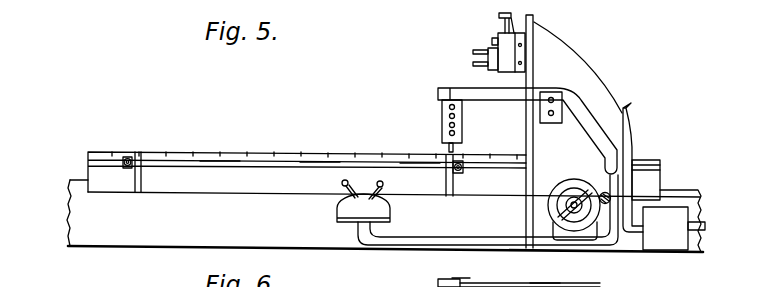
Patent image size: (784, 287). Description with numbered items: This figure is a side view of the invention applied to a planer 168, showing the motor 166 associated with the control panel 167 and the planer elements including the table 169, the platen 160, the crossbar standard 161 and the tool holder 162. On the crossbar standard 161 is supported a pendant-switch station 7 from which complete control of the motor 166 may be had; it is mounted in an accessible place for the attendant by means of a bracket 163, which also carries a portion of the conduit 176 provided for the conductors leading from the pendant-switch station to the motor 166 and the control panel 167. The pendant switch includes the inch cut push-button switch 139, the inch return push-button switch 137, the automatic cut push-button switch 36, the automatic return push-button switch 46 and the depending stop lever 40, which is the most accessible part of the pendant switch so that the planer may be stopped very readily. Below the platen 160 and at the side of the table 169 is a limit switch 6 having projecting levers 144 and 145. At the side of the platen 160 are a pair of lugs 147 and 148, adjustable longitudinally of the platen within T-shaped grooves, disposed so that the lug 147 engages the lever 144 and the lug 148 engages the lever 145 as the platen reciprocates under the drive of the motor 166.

In FIG. 5, the limit switch 6 is at (390, 214).
In FIG. 5, the pendant-switch station 7 is at (462, 133).
In FIG. 6, the pendant-switch station 7 is at (452, 278).
In FIG. 5, the automatic cut push-button switch 36 is at (449, 125).
In FIG. 5, the stop lever 40 is at (449, 148).
In FIG. 5, the automatic return push-button switch 46 is at (449, 133).
In FIG. 5, the inch return push-button switch 137 is at (449, 116).
In FIG. 5, the inch cut push-button switch 139 is at (449, 107).
In FIG. 5, the projecting lever 144 is at (342, 183).
In FIG. 5, the projecting lever 145 is at (383, 183).
In FIG. 5, the lug 147 is at (142, 181).
In FIG. 5, the lug 148 is at (456, 193).
In FIG. 5, the platen 160 is at (220, 190).
In FIG. 5, the crossbar standard 161 is at (578, 62).
In FIG. 5, the tool holder 162 is at (497, 36).
In FIG. 5, the bracket 163 is at (513, 97).
In FIG. 6, the bracket 163 is at (537, 282).
In FIG. 5, the motor 166 is at (571, 181).
In FIG. 5, the control panel 167 is at (663, 210).
In FIG. 5, the planer 168 is at (323, 146).
In FIG. 5, the table 169 is at (298, 247).
In FIG. 5, the conduit 176 is at (624, 107).